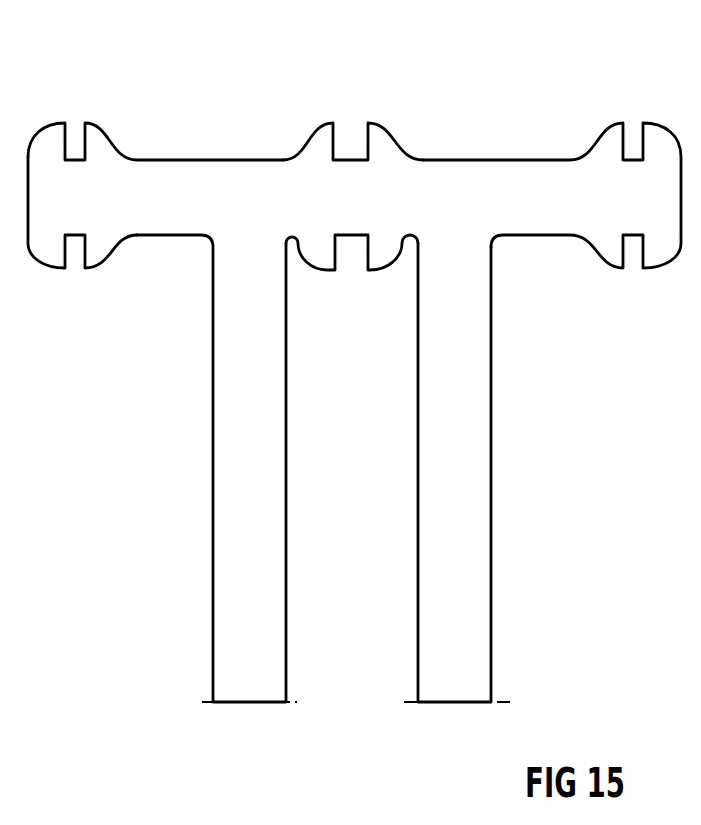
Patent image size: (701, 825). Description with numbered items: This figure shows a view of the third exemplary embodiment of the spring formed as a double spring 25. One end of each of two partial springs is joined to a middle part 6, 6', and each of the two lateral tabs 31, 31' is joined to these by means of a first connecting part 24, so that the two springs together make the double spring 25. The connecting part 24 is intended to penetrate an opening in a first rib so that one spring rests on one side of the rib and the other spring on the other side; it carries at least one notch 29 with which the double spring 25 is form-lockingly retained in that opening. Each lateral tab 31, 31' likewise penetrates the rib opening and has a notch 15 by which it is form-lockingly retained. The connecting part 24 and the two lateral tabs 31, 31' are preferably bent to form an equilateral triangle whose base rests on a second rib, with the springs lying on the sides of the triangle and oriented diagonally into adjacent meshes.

The middle part 6 is at (211, 468).
The middle part 6' is at (495, 472).
The notch 15 is at (74, 262).
The first connecting part 24 is at (300, 192).
The double spring 25 is at (430, 647).
The notch 29 is at (352, 143).
The lateral tab 31 is at (155, 125).
The lateral tab 31' is at (552, 166).